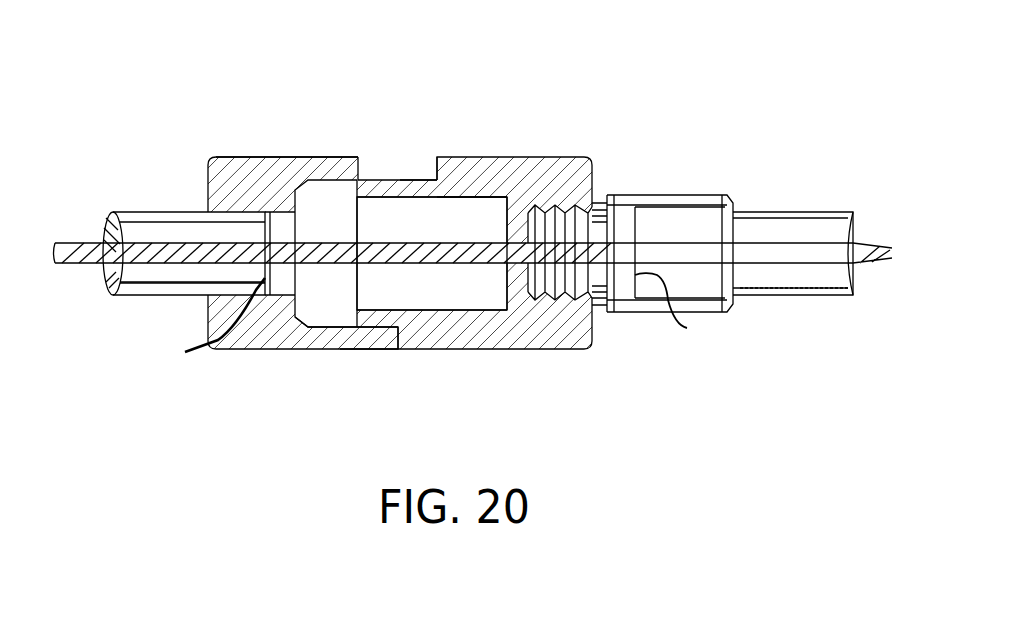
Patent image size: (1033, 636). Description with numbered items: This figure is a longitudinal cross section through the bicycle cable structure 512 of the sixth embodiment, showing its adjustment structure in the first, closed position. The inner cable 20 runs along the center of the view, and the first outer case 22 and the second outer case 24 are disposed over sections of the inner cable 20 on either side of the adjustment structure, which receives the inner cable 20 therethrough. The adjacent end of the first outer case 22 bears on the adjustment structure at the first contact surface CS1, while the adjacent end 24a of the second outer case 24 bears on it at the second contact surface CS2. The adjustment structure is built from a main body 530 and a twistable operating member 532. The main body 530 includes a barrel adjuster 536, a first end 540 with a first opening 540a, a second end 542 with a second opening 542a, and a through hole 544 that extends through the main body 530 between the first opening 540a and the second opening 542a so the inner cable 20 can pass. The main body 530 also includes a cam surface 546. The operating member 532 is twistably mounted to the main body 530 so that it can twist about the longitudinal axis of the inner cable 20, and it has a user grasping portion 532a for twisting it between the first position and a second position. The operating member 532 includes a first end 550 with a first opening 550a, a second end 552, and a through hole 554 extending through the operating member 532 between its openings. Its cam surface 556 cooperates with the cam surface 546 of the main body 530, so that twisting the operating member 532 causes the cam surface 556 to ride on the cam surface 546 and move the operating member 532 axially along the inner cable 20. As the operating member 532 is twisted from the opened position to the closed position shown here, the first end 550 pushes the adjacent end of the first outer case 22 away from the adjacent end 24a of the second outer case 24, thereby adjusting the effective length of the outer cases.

The bicycle cable structure 512 is at (199, 75).
The inner cable 20 is at (92, 240).
The first outer case 22 is at (167, 207).
The second outer case 24 is at (804, 211).
The adjacent end of the second outer case 24a is at (779, 293).
The main body 530 is at (545, 351).
The operating member 532 is at (277, 353).
The user grasping portion 532a is at (247, 165).
The barrel adjuster 536 is at (696, 190).
The first end of the main body 540 is at (387, 178).
The first opening 540a is at (348, 217).
The second end of the main body 542 is at (596, 186).
The second opening 542a is at (586, 220).
The through hole 544 is at (480, 213).
The cam surface of the main body 546 is at (432, 171).
The first end of the operating member 550 is at (207, 190).
The first opening of the operating member 550a is at (223, 287).
The second end of the operating member 552 is at (368, 350).
The through hole of the operating member 554 is at (338, 325).
The cam surface of the operating member 556 is at (401, 337).
The first contact surface CS1 is at (203, 326).
The second contact surface CS2 is at (682, 308).